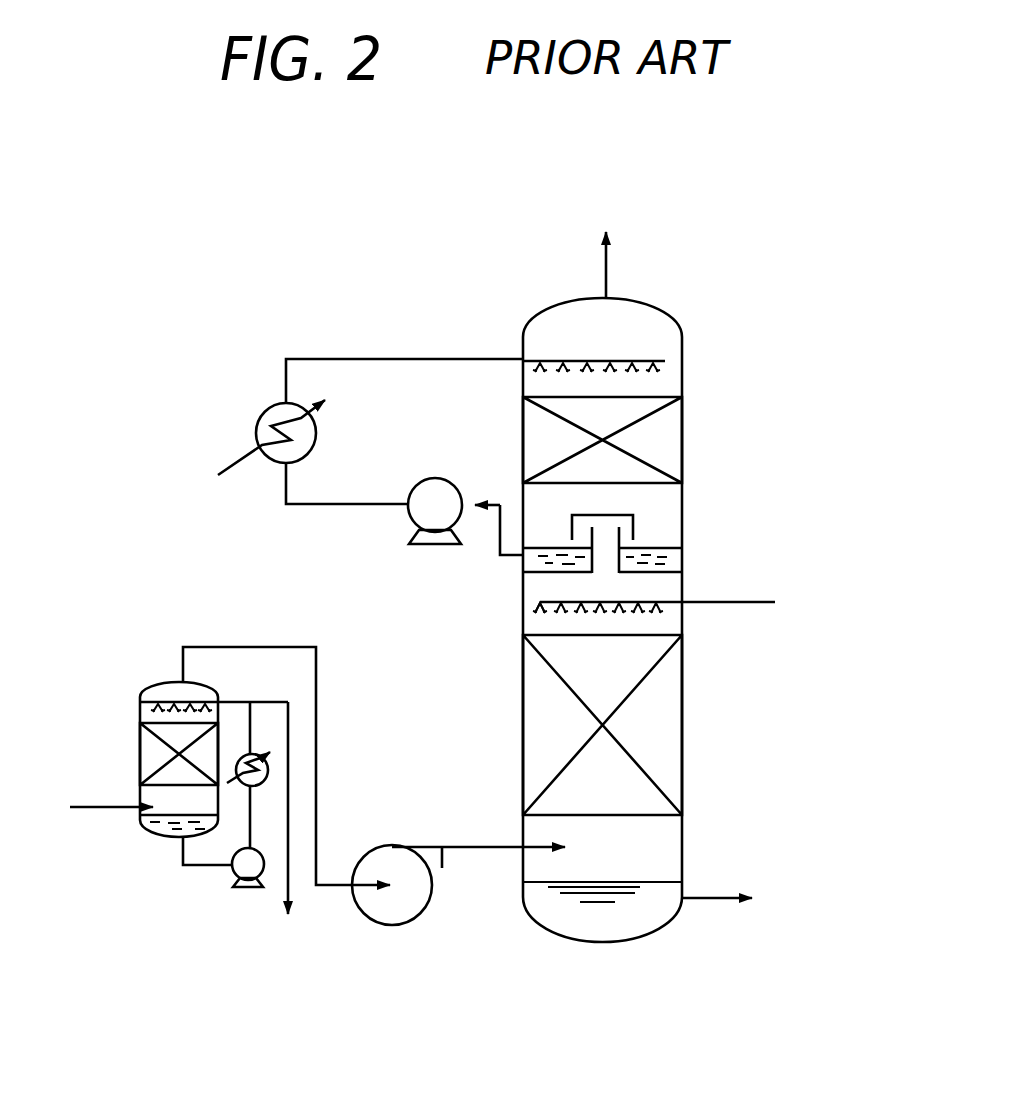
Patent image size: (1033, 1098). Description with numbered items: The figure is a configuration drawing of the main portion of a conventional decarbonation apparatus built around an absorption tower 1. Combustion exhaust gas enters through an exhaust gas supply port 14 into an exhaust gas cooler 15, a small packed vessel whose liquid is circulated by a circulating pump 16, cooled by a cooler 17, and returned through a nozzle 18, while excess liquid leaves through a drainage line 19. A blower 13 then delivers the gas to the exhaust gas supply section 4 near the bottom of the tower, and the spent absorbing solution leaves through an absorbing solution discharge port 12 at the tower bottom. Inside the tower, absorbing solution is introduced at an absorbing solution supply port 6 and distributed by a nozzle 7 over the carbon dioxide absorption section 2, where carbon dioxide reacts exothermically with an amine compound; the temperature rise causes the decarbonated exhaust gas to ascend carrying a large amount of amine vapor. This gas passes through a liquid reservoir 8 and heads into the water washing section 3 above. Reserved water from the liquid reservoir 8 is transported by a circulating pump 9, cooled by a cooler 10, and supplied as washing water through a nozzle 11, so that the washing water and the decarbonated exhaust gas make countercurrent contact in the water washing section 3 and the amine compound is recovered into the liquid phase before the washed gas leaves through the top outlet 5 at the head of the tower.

The absorption tower 1 is at (752, 410).
The carbon dioxide absorption section 2 is at (682, 722).
The water washing section 3 is at (676, 435).
The exhaust gas supply section 4 is at (503, 849).
The top vapor outlet 5 is at (610, 292).
The absorbing solution supply port 6 is at (684, 601).
The nozzle 7 is at (540, 607).
The liquid reservoir 8 is at (656, 547).
The circulating pump 9 is at (441, 478).
The cooler 10 is at (265, 412).
The nozzle 11 is at (658, 361).
The absorbing solution discharge port 12 is at (686, 897).
The blower 13 is at (392, 925).
The exhaust gas supply port 14 is at (141, 813).
The exhaust gas cooler 15 is at (140, 741).
The circulating pump 16 is at (233, 870).
The cooler 17 is at (268, 771).
The nozzle 18 is at (168, 702).
The drainage line 19 is at (293, 895).